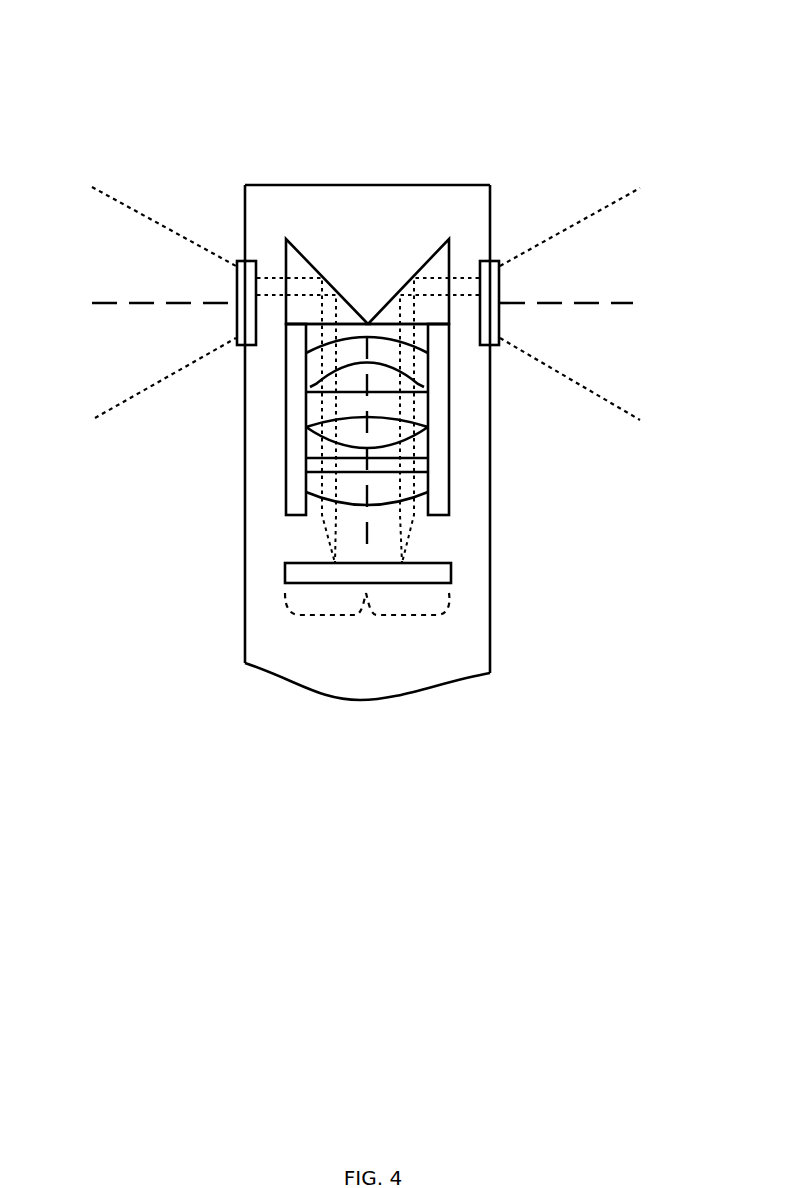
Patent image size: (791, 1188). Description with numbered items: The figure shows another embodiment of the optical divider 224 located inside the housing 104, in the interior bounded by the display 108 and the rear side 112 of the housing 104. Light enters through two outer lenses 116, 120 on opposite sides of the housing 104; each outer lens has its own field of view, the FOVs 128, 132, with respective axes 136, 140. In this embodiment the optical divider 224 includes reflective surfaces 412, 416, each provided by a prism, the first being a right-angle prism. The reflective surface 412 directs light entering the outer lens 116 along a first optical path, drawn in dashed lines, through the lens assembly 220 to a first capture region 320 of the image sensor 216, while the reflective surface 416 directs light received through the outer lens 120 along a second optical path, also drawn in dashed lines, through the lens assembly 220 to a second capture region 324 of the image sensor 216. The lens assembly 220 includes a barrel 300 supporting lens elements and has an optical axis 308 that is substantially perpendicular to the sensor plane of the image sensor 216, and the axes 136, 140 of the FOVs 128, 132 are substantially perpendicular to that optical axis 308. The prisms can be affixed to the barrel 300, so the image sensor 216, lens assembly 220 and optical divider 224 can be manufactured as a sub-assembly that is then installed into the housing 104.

The housing 104 is at (318, 185).
The display 108 is at (245, 647).
The rear side 112 is at (490, 542).
The outer lens 116 is at (237, 285).
The outer lens 120 is at (500, 288).
The FOV 128 is at (113, 198).
The FOV 132 is at (610, 205).
The axis 136 is at (136, 303).
The axis 140 is at (596, 303).
The optical divider 224 is at (363, 211).
The reflective surface 412 is at (317, 271).
The reflective surface 416 is at (425, 265).
The lens assembly 220 is at (347, 429).
The barrel 300 is at (300, 413).
The optical axis 308 is at (370, 398).
The image sensor 216 is at (452, 563).
The first capture region 320 is at (327, 615).
The second capture region 324 is at (406, 615).